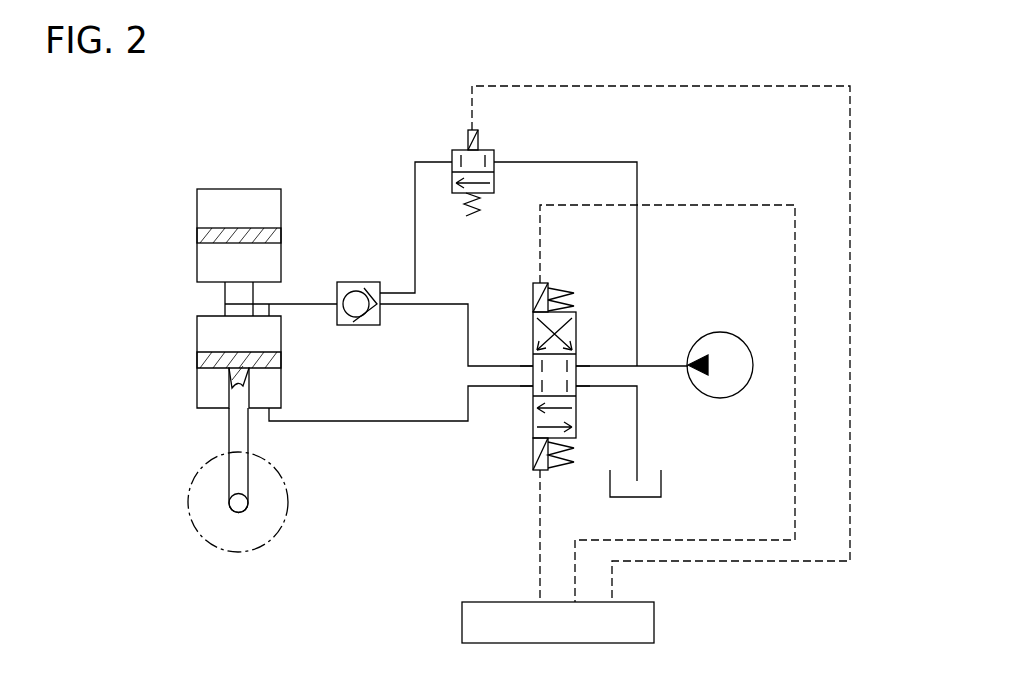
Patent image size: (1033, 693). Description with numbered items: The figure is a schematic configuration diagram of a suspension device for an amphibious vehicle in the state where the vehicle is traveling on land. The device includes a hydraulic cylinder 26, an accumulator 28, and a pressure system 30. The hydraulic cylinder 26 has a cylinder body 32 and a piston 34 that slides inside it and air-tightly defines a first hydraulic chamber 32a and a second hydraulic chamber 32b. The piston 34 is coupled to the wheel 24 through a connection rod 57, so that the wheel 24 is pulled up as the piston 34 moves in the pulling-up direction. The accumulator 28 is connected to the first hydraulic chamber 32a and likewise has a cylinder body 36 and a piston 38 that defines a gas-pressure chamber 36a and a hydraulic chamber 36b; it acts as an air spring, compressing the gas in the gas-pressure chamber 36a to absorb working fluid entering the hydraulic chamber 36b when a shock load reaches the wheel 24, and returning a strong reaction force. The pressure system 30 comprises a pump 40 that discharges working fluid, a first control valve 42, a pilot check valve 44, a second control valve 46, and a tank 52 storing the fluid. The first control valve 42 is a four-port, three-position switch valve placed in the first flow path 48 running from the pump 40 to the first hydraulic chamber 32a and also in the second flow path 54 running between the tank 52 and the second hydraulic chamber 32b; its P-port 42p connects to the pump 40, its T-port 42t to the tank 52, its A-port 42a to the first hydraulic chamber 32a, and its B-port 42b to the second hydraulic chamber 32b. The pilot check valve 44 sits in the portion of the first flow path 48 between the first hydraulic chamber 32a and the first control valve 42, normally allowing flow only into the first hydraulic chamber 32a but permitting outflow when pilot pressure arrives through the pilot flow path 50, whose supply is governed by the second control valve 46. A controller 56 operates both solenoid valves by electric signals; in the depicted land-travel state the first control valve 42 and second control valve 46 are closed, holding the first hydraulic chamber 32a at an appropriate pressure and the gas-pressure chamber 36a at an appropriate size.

The wheel 24 is at (288, 500).
The hydraulic cylinder 26 is at (240, 338).
The accumulator 28 is at (240, 224).
The pressure system 30 is at (774, 65).
The cylinder body 32 is at (196, 334).
The first hydraulic chamber 32a is at (281, 338).
The second hydraulic chamber 32b is at (281, 385).
The piston 34 is at (196, 362).
The cylinder body 36 is at (196, 210).
The gas-pressure chamber 36a is at (281, 211).
The hydraulic chamber 36b is at (281, 258).
The piston 38 is at (196, 240).
The pump 40 is at (727, 333).
The first control valve 42 is at (556, 367).
The A-port 42a is at (532, 365).
The B-port 42b is at (532, 388).
The P-port 42p is at (577, 365).
The T-port 42t is at (577, 388).
The pilot check valve 44 is at (358, 282).
The second control valve 46 is at (452, 160).
The first flow path 48 is at (444, 303).
The pilot flow path 50 is at (414, 198).
The tank 52 is at (662, 479).
The second flow path 54 is at (378, 420).
The controller 56 is at (655, 621).
The connection rod 57 is at (228, 441).